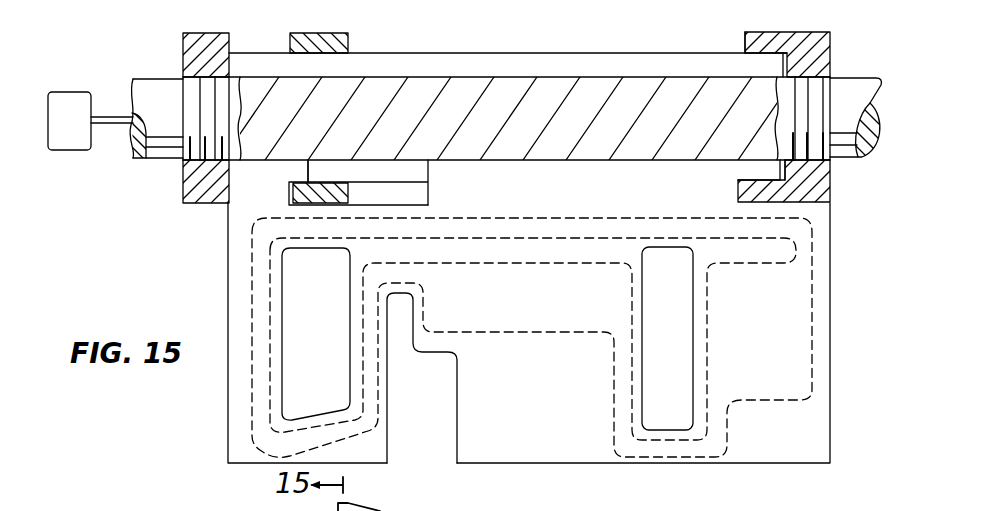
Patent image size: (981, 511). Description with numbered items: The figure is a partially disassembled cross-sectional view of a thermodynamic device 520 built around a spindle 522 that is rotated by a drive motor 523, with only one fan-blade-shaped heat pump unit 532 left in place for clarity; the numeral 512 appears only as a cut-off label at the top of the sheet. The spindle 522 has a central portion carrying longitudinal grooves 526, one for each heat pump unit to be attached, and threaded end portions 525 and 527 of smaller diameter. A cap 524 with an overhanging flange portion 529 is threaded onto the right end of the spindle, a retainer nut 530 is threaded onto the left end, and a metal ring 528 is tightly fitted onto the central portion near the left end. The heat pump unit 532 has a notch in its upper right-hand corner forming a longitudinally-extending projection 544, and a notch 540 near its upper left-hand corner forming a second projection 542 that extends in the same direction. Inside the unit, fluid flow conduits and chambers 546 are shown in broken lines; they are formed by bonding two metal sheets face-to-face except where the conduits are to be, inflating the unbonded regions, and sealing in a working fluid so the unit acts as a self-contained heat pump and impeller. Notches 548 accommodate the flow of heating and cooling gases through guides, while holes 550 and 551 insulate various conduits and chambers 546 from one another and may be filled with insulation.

The assembly 512 is at (206, 4).
The thermodynamic device 520 is at (150, 214).
The spindle 522 is at (160, 85).
The drive motor 523 is at (72, 145).
The cap 524 is at (805, 32).
The threaded end portion 525 is at (182, 160).
The longitudinal grooves 526 is at (583, 53).
The threaded end portion 527 is at (813, 147).
The metal ring 528 is at (350, 38).
The overhanging flange portion 529 is at (745, 42).
The retainer nut 530 is at (205, 207).
The heat pump unit 532 is at (772, 464).
The notch 540 is at (415, 196).
The second projection 542 is at (298, 173).
The longitudinally-extending projection 544 is at (765, 167).
The fluid flow conduits and chambers 546 is at (262, 410).
The notches 548 is at (430, 408).
The hole 550 is at (658, 295).
The hole 551 is at (297, 300).